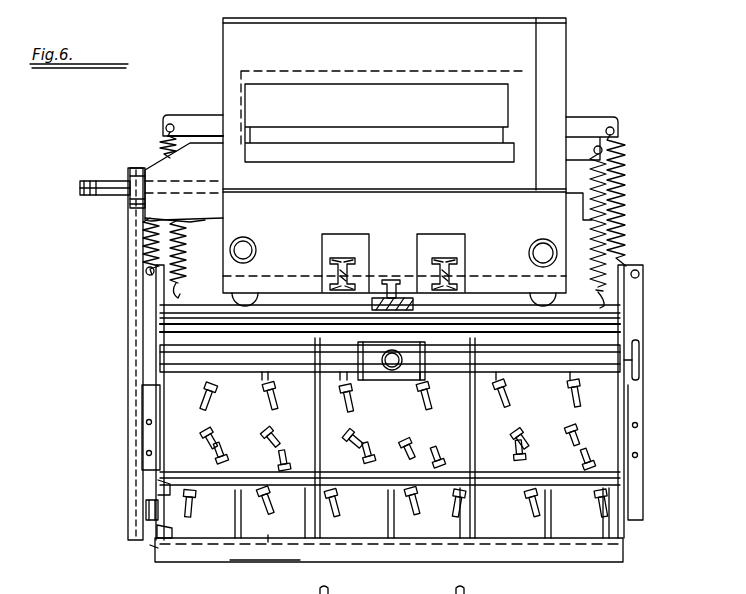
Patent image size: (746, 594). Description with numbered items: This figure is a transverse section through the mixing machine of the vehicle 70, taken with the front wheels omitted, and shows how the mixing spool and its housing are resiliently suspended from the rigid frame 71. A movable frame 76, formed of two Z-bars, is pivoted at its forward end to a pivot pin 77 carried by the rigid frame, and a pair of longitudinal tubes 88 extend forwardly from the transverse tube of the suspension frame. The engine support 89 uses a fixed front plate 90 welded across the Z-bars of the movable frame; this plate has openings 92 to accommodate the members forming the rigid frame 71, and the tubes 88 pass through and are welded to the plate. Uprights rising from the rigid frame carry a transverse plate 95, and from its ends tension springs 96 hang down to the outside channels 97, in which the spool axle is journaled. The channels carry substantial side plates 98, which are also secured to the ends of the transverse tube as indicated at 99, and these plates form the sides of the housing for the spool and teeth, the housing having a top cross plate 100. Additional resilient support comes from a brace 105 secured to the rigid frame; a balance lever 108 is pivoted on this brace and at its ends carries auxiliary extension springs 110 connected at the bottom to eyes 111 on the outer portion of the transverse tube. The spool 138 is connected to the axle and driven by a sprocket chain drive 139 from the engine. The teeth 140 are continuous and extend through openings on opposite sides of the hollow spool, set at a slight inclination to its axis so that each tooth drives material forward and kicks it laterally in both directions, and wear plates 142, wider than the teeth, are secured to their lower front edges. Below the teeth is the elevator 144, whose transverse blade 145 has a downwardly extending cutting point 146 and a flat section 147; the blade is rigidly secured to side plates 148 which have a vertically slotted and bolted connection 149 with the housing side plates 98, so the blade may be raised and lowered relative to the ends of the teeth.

The vehicle 70 is at (667, 253).
The rigid frame 71 is at (458, 282).
The movable frame 76 is at (387, 272).
The pivot pin 77 is at (394, 288).
The longitudinal tubes 88 is at (258, 252).
The engine support 89 is at (148, 230).
The fixed front plate 90 is at (418, 218).
The openings 92 is at (465, 256).
The transverse plate 95 is at (199, 124).
The tension springs 96 is at (160, 151).
The outside channels 97 is at (148, 334).
The side plates 98 is at (158, 486).
The securing connection 99 is at (160, 307).
The top cross plate 100 is at (288, 326).
The brace 105 is at (149, 377).
The balance lever 108 is at (578, 148).
The auxiliary extension spring 110 is at (628, 196).
The eyes 111 is at (607, 298).
The spool 138 is at (408, 444).
The sprocket chain drive 139 is at (134, 274).
The teeth 140 is at (388, 503).
The wear plates 142 is at (350, 408).
The elevator 144 is at (250, 570).
The transverse blade 145 is at (152, 549).
The cutting point 146 is at (182, 556).
The flat section 147 is at (272, 530).
The side plates 148 is at (146, 512).
The slotted and bolted connection 149 is at (155, 526).